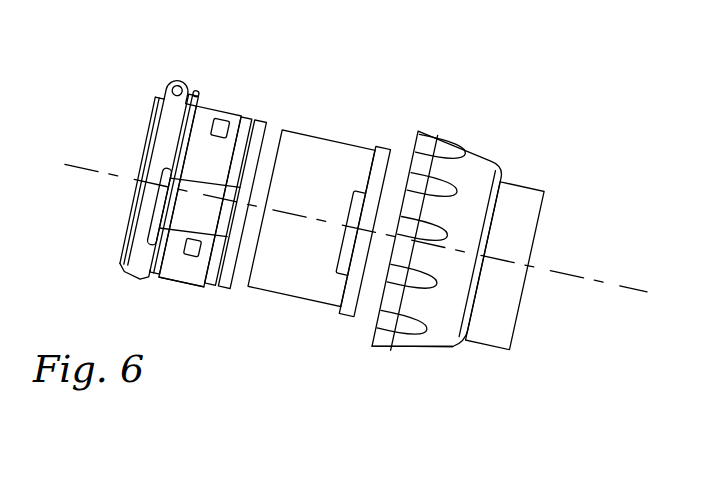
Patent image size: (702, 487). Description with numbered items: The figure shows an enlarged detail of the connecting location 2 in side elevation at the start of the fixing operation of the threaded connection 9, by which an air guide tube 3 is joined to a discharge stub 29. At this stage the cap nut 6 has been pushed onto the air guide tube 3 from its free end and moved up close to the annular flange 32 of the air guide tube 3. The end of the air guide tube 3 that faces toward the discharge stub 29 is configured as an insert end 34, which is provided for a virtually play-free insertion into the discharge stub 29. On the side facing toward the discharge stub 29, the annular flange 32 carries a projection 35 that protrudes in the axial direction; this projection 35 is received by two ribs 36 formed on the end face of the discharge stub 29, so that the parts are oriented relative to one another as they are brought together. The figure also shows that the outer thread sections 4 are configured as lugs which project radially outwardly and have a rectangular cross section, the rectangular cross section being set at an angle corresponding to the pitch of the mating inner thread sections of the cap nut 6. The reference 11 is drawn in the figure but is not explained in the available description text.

The connecting location 2 is at (279, 319).
The air guide tube 3 is at (523, 200).
The outer thread sections 4 is at (214, 99).
The cap nut 6 is at (437, 340).
The threaded connection 9 is at (198, 299).
The housing 11 is at (222, 120).
The discharge stub 29 is at (245, 117).
The annular flange 32 is at (385, 148).
The insert end 34 is at (333, 158).
The projection 35 is at (340, 252).
The ribs 36 is at (243, 165).